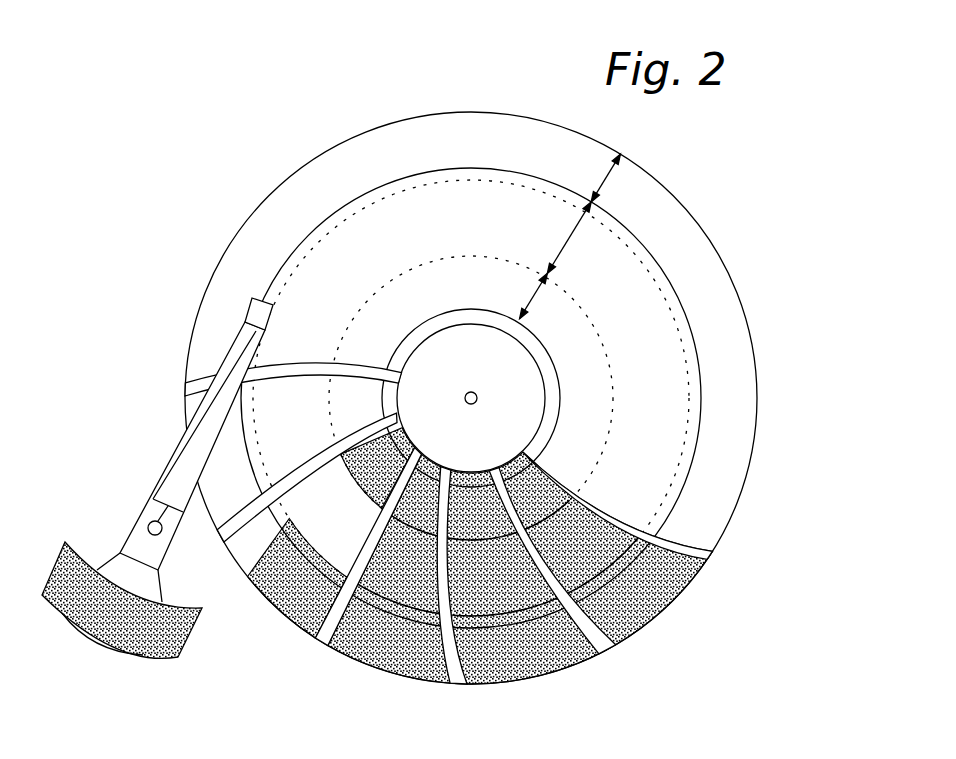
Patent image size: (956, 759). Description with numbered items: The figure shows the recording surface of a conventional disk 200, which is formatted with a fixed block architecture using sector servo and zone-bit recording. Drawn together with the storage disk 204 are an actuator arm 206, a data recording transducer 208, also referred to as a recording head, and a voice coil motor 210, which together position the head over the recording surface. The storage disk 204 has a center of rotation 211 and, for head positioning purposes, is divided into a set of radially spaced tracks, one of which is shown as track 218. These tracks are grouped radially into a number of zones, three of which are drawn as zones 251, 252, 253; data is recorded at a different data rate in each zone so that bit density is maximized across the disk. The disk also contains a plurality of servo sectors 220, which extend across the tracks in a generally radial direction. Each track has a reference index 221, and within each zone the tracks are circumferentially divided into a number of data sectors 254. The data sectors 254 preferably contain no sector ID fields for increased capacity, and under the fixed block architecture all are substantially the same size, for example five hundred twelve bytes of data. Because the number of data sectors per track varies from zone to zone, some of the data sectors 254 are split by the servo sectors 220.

The conventional disk 200 is at (238, 82).
The storage disk 204 is at (265, 200).
The actuator arm 206 is at (172, 457).
The data recording transducer 208 is at (250, 306).
The voice coil motor 210 is at (177, 607).
The center of rotation 211 is at (478, 392).
The track 218 is at (380, 187).
The servo sectors 220 is at (611, 648).
The reference index 221 is at (707, 558).
The zone 251 is at (597, 182).
The zone 252 is at (562, 243).
The zone 253 is at (533, 302).
The data sectors 254 is at (677, 597).